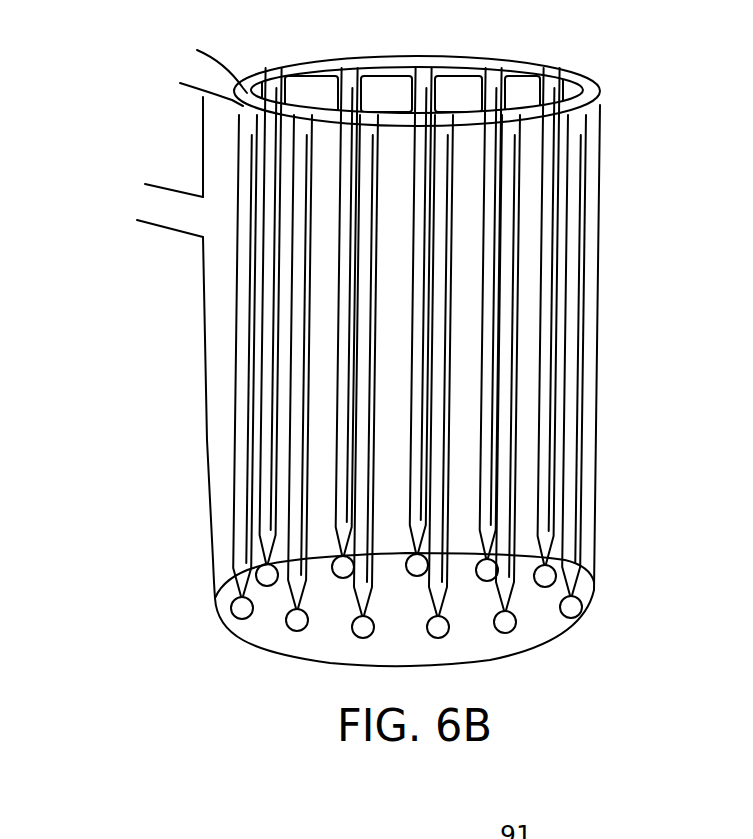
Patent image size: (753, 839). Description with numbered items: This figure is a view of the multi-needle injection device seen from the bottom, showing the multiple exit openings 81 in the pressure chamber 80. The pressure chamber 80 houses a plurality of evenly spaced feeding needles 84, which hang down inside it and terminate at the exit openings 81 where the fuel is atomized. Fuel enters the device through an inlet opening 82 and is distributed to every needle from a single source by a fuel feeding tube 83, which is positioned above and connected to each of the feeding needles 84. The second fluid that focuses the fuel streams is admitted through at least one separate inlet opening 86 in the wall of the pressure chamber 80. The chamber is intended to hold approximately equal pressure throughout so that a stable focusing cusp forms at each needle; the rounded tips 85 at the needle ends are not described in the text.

The pressure chamber 80 is at (205, 444).
The exit openings 81 is at (356, 634).
The inlet opening 82 is at (183, 70).
The fuel feeding tube 83 is at (385, 55).
The feeding needles 84 is at (560, 215).
The electrode balls 85 is at (580, 598).
The separate inlet opening 86 is at (168, 209).